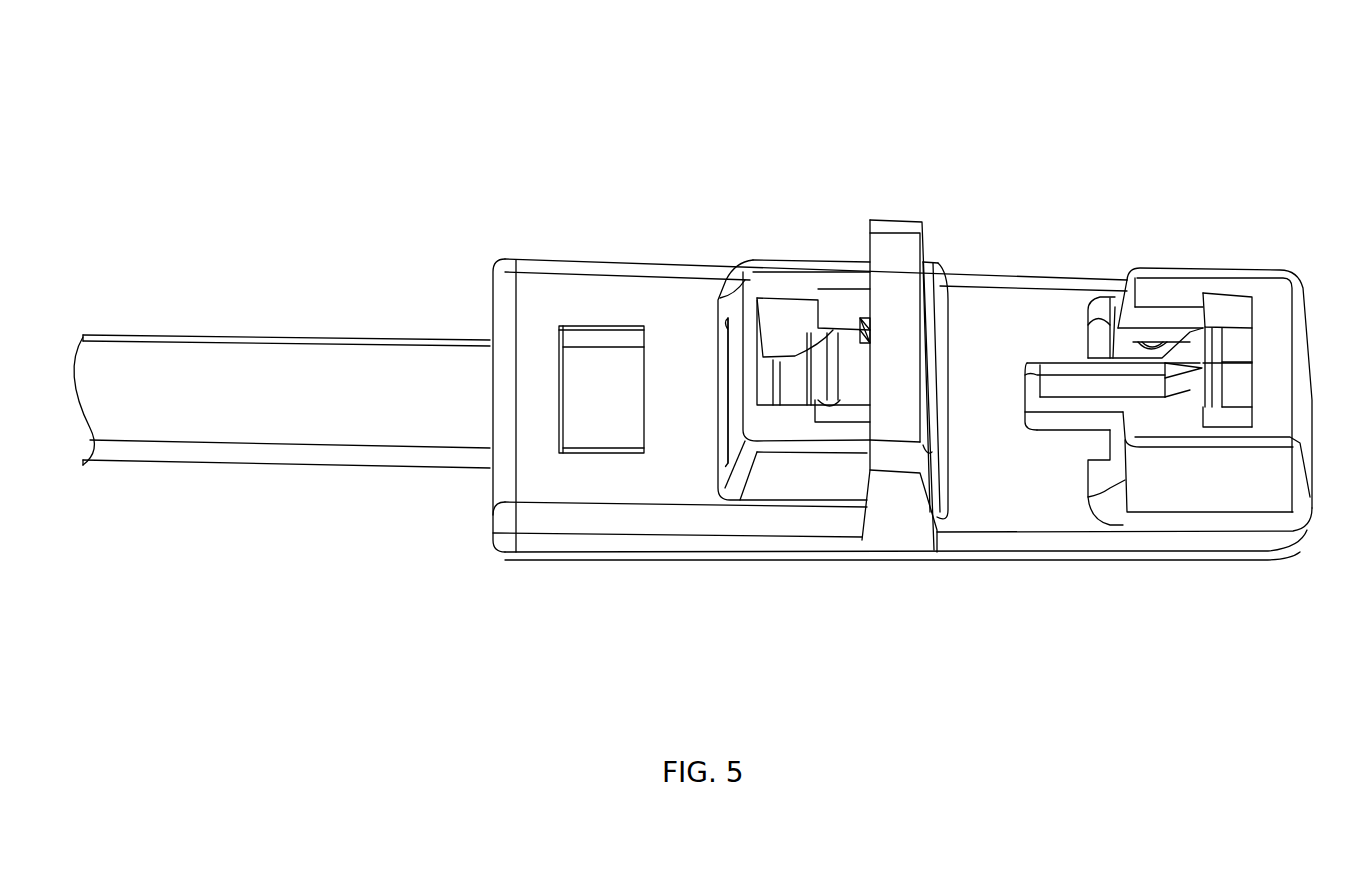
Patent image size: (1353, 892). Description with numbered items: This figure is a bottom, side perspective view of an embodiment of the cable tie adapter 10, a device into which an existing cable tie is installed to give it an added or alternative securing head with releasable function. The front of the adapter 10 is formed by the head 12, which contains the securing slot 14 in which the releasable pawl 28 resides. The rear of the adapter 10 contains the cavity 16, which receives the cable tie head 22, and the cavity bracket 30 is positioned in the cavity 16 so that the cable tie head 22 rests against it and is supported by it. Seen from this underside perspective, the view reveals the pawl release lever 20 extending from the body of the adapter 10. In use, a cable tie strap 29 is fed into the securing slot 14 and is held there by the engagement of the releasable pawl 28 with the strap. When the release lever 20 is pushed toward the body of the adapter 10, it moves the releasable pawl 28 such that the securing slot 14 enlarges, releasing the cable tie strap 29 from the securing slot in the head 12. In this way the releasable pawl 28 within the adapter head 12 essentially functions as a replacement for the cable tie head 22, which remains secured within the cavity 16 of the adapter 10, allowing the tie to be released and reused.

The cable tie adapter 10 is at (222, 132).
The head 12 is at (1262, 485).
The securing slot 14 is at (1238, 420).
The cavity 16 is at (721, 299).
The pawl release lever 20 is at (1075, 387).
The cable tie head 22 is at (803, 480).
The releasable pawl 28 is at (1197, 352).
The cable tie strap 29 is at (226, 453).
The cavity bracket 30 is at (900, 250).